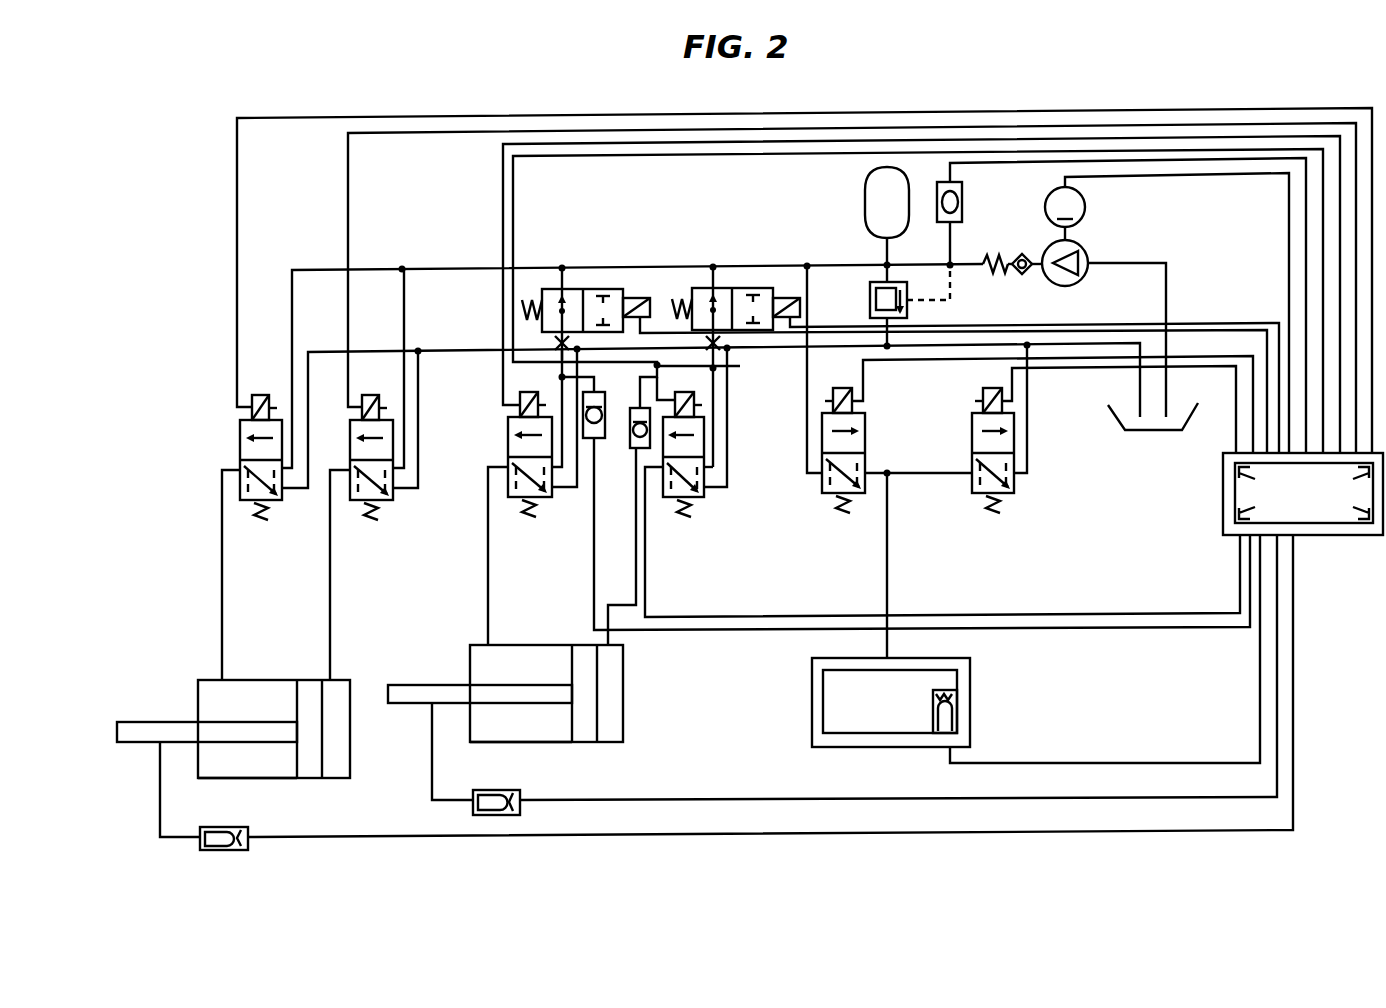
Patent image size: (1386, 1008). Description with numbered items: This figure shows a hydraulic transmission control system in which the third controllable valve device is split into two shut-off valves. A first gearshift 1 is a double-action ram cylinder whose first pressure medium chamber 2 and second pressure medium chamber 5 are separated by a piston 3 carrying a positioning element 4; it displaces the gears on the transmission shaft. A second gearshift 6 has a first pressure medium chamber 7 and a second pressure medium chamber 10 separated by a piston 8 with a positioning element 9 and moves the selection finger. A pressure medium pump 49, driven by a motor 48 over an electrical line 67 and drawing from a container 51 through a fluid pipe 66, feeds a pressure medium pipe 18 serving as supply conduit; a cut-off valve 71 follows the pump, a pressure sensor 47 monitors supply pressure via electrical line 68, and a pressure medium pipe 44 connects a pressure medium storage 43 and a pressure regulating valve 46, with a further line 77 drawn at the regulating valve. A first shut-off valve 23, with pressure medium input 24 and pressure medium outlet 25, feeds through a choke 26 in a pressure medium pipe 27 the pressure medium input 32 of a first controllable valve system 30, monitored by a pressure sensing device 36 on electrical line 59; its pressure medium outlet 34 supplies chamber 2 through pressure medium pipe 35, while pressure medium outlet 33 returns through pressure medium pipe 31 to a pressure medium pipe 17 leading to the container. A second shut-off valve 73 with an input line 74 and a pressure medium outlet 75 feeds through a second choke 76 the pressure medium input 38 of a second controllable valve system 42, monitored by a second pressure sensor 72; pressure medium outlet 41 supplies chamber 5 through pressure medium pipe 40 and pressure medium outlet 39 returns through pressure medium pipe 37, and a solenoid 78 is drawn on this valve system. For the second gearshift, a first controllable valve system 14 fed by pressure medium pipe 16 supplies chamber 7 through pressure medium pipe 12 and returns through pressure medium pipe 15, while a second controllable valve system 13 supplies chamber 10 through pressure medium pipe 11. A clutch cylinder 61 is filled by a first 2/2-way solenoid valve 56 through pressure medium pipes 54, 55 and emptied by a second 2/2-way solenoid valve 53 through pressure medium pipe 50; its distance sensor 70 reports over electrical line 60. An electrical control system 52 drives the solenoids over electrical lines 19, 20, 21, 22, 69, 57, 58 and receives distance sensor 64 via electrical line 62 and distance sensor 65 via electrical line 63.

The first gearshift 1 is at (623, 672).
The first pressure medium chamber 2 is at (615, 716).
The piston 3 is at (582, 735).
The positioning element 4 is at (532, 698).
The second pressure medium chamber 5 is at (495, 742).
The second gearshift 6 is at (350, 685).
The first pressure medium chamber 7 is at (342, 738).
The piston 8 is at (310, 770).
The positioning element 9 is at (260, 730).
The second pressure medium chamber 10 is at (224, 772).
The pressure medium pipe 11 is at (222, 605).
The pressure medium pipe 12 is at (330, 605).
The second controllable valve system 13 is at (240, 452).
The first controllable valve system 14 is at (350, 462).
The pressure medium pipe 15 is at (420, 385).
The pressure medium pipe 16 is at (405, 305).
The pressure medium pipe 17 is at (452, 350).
The pressure medium pipe 18 is at (455, 266).
The electrical line 19 is at (390, 134).
The electrical line 20 is at (237, 190).
The electrical line 21 is at (503, 190).
The electrical line 22 is at (760, 156).
The third controllable valve system 23 is at (770, 288).
The pressure medium input 24 is at (713, 268).
The pressure medium outlet 25 is at (648, 330).
The choke 26 is at (809, 365).
The pressure medium pipe 27 is at (742, 367).
The first controllable valve system 30 is at (705, 450).
The pressure medium pipe 31 is at (730, 476).
The pressure medium input 32 is at (716, 496).
The pressure medium outlet 33 is at (705, 505).
The pressure medium outlet 34 is at (648, 495).
The pressure medium pipe 35 is at (645, 596).
The pressure sensing device 36 is at (634, 510).
The pressure medium pipe 37 is at (572, 489).
The pressure medium input 38 is at (592, 500).
The pressure medium outlet 39 is at (540, 520).
The pressure medium pipe 40 is at (488, 560).
The pressure medium outlet 41 is at (508, 455).
The second controllable valve system 42 is at (518, 412).
The pressure medium storage 43 is at (865, 195).
The pressure medium pipe 44 is at (887, 255).
The pressure regulating valve 46 is at (910, 306).
The pressure sensor 47 is at (962, 193).
The motor 48 is at (1085, 210).
The pressure medium pump 49 is at (1075, 258).
The pressure medium pipe 50 is at (1030, 452).
The container 51 is at (1153, 432).
The electrical control system 52 is at (1223, 502).
The second 2/2-way solenoid valve 53 is at (1010, 492).
The pressure medium pipe 54 is at (915, 476).
The pressure medium pipe 55 is at (889, 580).
The first 2/2-way solenoid valve 56 is at (858, 496).
The electrical line 57 is at (914, 360).
The electrical line 58 is at (1066, 369).
The electrical line 59 is at (1150, 628).
The electrical line 60 is at (1136, 763).
The clutch cylinder 61 is at (972, 680).
The electrical line 62 is at (668, 800).
The electrical line 63 is at (655, 835).
The distance sensor 64 is at (493, 816).
The distance sensor 65 is at (246, 851).
The fluid pipe 66 is at (1166, 295).
The electrical line 67 is at (1306, 212).
The electrical line 68 is at (1289, 252).
The electrical line 69 is at (1090, 323).
The distance sensor 70 is at (957, 722).
The cut-off valve 71 is at (995, 260).
The second pressure sensor 72 is at (598, 440).
The second shut-off valve 73 is at (610, 289).
The line 74 is at (562, 268).
The pressure medium outlet 75 is at (555, 341).
The second choke 76 is at (560, 356).
The line 77 is at (838, 328).
The solenoid 78 is at (720, 418).